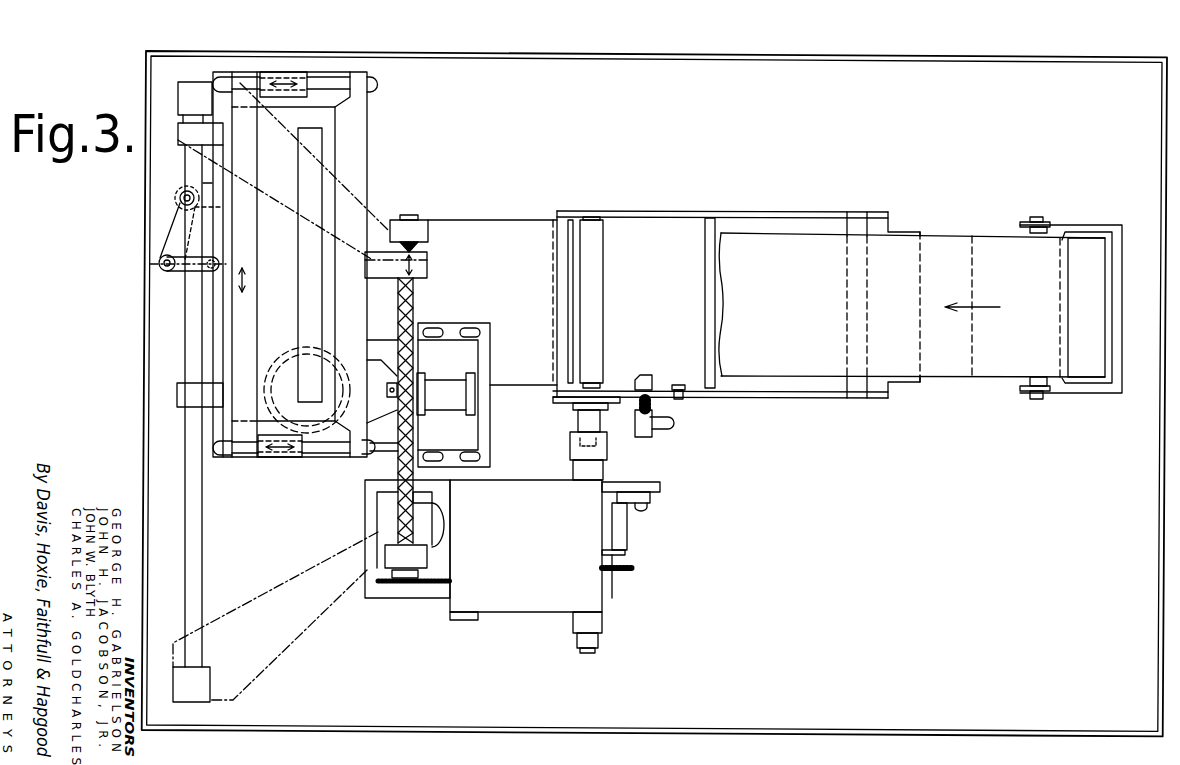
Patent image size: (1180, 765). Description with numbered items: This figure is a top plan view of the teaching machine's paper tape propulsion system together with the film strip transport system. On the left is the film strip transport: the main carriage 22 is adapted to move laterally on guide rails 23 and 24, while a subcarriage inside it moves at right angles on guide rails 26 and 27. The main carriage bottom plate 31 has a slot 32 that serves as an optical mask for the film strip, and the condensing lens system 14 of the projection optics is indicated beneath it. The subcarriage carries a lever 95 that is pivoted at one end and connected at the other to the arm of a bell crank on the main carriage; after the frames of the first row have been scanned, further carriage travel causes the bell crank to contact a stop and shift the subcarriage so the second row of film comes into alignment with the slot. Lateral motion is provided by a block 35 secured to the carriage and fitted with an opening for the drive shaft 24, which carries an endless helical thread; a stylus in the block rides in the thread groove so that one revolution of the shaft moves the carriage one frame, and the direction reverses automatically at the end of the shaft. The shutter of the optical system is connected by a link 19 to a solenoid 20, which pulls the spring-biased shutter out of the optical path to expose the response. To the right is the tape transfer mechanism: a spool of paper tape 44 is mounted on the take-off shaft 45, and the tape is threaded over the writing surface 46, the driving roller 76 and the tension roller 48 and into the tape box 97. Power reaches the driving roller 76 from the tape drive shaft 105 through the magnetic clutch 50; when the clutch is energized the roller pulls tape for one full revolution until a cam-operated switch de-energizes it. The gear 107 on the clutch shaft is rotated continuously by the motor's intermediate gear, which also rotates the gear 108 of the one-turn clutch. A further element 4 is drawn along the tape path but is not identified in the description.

The sheet material 4 is at (797, 248).
The condensing lens system 14 is at (287, 357).
The link 19 is at (397, 373).
The solenoid 20 is at (448, 382).
The main carriage 22 is at (367, 157).
The guide rail 23 is at (193, 435).
The drive shaft 24 is at (415, 295).
The guide rail 26 is at (237, 460).
The guide rail 27 is at (332, 83).
The main carriage bottom plate 31 is at (330, 132).
The slot 32 is at (304, 275).
The block 35 is at (374, 267).
The spool of paper tape 44 is at (1092, 250).
The take-off shaft 45 is at (1037, 400).
The writing surface 46 is at (748, 223).
The tension roller 48 is at (652, 378).
The magnetic clutch 50 is at (618, 533).
The driving roller 76 is at (593, 245).
The lever 95 is at (187, 268).
The tape box 97 is at (468, 227).
The tape drive shaft 105 is at (573, 452).
The gear 107 is at (635, 568).
The gear 108 is at (452, 550).